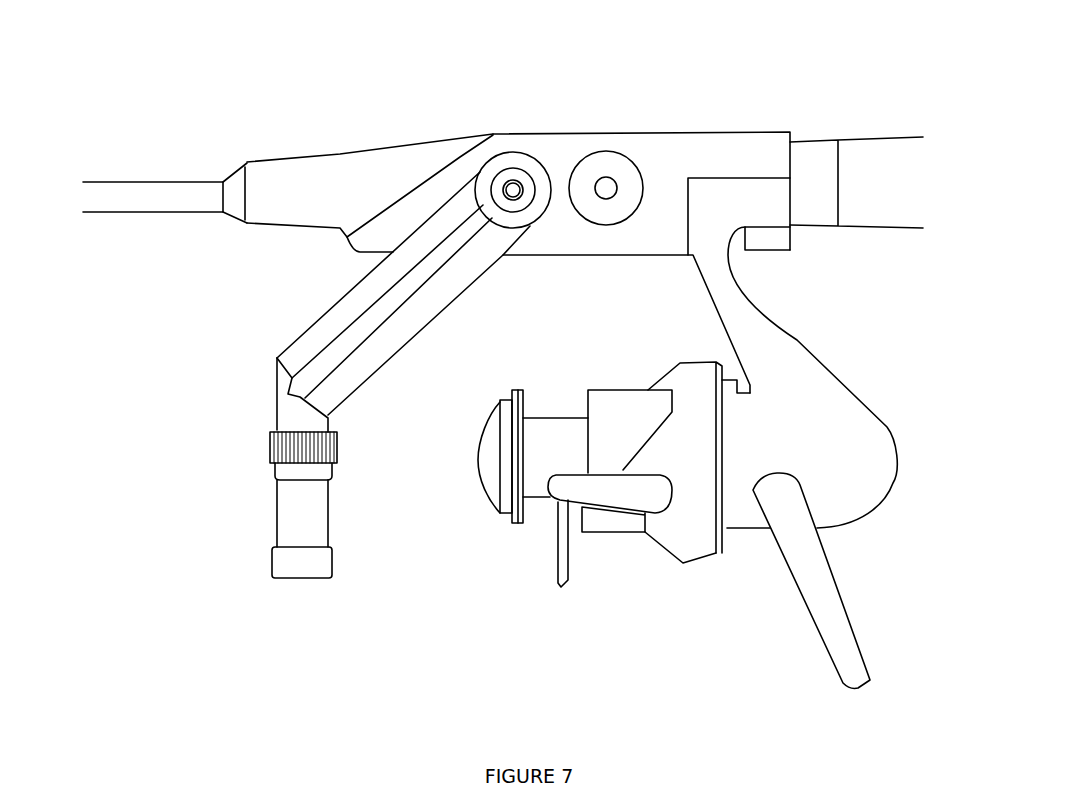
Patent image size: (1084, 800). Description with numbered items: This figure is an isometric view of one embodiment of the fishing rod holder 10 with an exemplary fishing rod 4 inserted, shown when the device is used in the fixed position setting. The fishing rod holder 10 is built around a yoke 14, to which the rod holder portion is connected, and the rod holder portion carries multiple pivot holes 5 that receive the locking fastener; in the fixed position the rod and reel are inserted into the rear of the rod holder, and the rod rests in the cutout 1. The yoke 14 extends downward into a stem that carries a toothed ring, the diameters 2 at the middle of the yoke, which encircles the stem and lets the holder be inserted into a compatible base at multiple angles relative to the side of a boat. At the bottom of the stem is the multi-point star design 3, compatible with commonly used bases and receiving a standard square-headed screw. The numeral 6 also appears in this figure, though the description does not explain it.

The cutout 1 is at (752, 264).
The toothed ring 2 is at (246, 462).
The multi-point star design 3 is at (244, 569).
The fishing rod 4 is at (347, 127).
The pivot holes 5 is at (586, 141).
The drive mechanism 6 is at (699, 605).
The fishing rod holder 10 is at (676, 114).
The yoke 14 is at (281, 318).